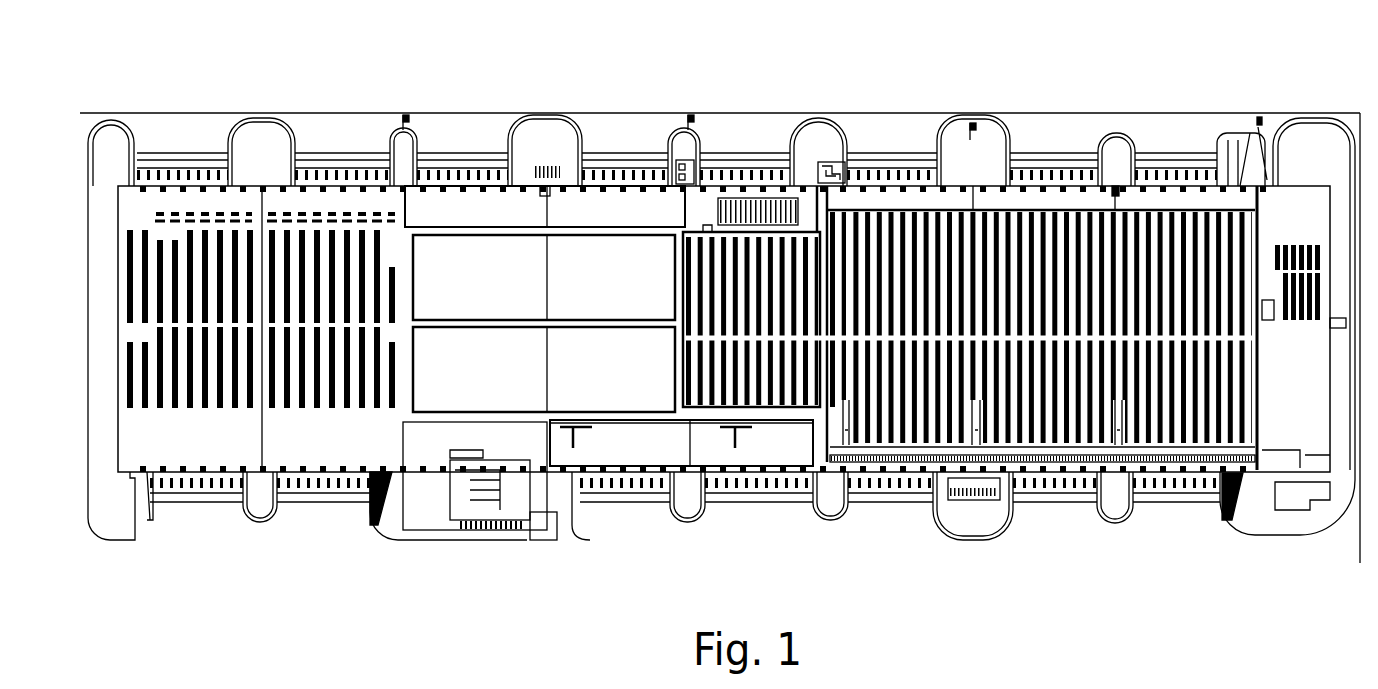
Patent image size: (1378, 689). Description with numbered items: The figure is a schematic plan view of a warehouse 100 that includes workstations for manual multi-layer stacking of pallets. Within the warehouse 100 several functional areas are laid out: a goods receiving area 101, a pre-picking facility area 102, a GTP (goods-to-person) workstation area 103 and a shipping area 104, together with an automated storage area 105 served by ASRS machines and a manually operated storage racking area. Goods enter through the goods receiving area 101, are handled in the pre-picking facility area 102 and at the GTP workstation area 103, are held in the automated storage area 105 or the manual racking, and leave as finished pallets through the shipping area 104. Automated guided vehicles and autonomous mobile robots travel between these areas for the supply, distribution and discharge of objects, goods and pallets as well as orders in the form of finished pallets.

The warehouse 100 is at (862, 96).
The goods receiving area 101 is at (614, 440).
The pre-picking facility area 102 is at (470, 378).
The GTP workstation area 103 is at (450, 296).
The shipping area 104 is at (518, 212).
The automated storage area 105 is at (1045, 452).